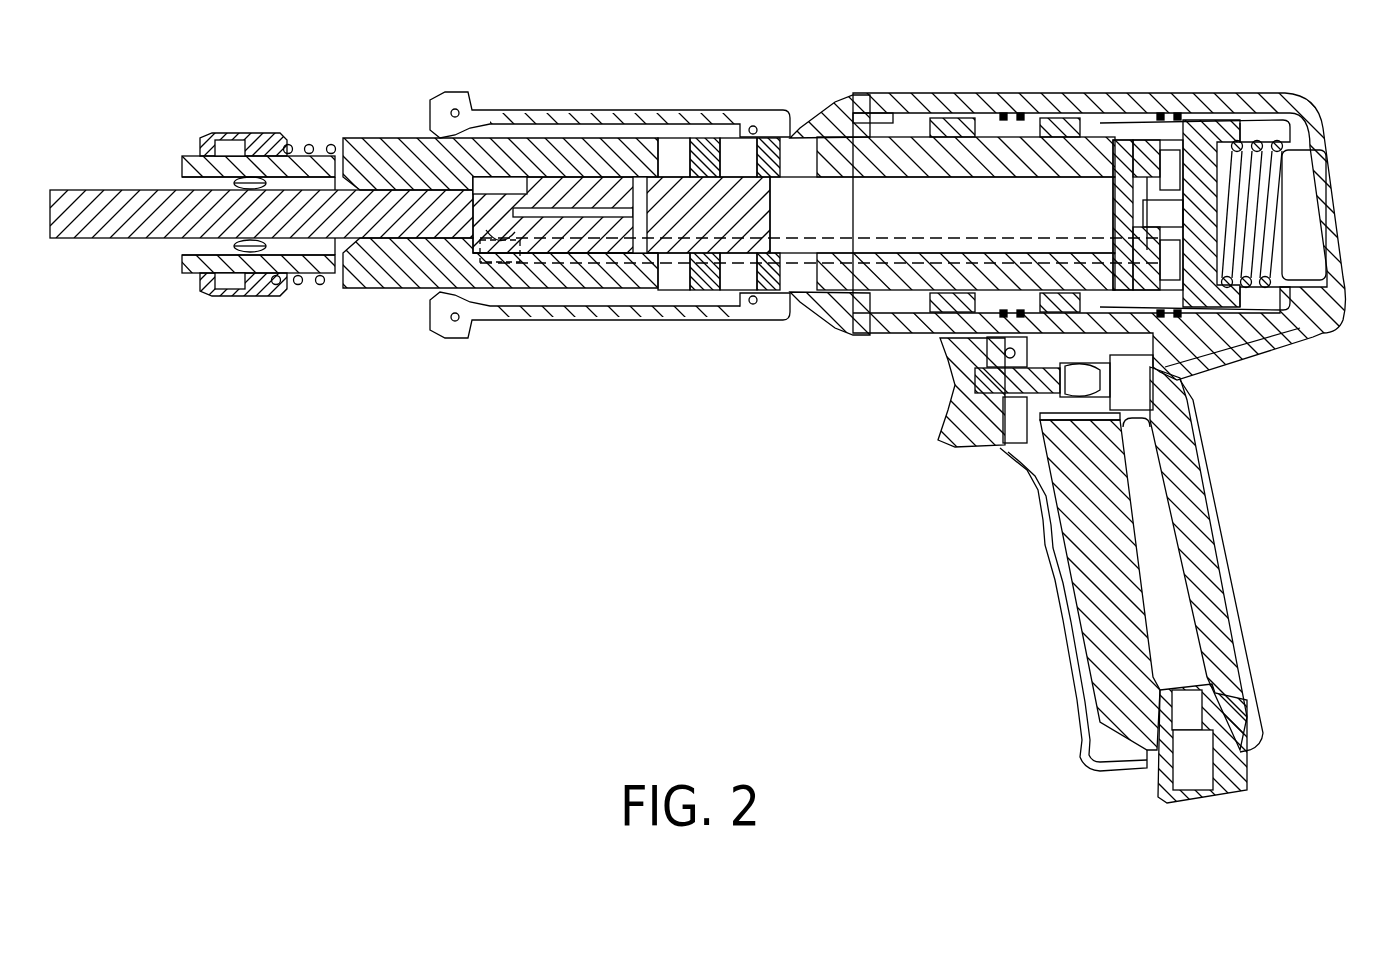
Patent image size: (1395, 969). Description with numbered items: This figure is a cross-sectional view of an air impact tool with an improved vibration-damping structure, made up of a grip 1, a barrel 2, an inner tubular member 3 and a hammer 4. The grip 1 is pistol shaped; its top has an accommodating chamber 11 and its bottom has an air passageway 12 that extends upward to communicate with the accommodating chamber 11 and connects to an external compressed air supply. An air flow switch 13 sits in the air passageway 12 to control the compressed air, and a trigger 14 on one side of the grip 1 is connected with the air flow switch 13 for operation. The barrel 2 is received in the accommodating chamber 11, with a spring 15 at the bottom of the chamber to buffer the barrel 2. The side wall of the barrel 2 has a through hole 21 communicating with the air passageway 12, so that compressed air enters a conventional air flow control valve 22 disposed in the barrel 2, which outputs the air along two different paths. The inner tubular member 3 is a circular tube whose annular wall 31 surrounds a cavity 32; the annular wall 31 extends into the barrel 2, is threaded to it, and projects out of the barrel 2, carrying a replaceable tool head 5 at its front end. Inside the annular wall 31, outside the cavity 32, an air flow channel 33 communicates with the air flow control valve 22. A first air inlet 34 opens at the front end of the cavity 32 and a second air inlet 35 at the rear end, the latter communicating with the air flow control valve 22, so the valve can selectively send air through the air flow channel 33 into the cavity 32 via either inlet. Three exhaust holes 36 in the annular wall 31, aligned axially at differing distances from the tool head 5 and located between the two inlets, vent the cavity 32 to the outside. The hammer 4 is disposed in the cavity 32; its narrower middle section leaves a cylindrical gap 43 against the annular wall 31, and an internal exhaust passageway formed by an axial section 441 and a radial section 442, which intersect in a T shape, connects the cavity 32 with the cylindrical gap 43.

The grip 1 is at (1123, 429).
The barrel 2 is at (1063, 130).
The inner tubular member 3 is at (942, 145).
The hammer 4 is at (621, 197).
The tool head 5 is at (398, 208).
The accommodating chamber 11 is at (1300, 222).
The air passageway 12 is at (1172, 553).
The air flow switch 13 is at (1125, 383).
The trigger 14 is at (963, 415).
The spring 15 is at (1255, 140).
The through hole 21 is at (1192, 343).
The air flow control valve 22 is at (1097, 190).
The annular wall 31 is at (908, 133).
The cavity 32 is at (959, 203).
The air flow channel 33 is at (574, 260).
The first air inlet 34 is at (492, 228).
The second air inlet 35 is at (1153, 143).
The exhaust hole 36 is at (673, 143).
The cylindrical gap 43 is at (712, 153).
The axial section 441 is at (547, 213).
The radial section 442 is at (636, 182).